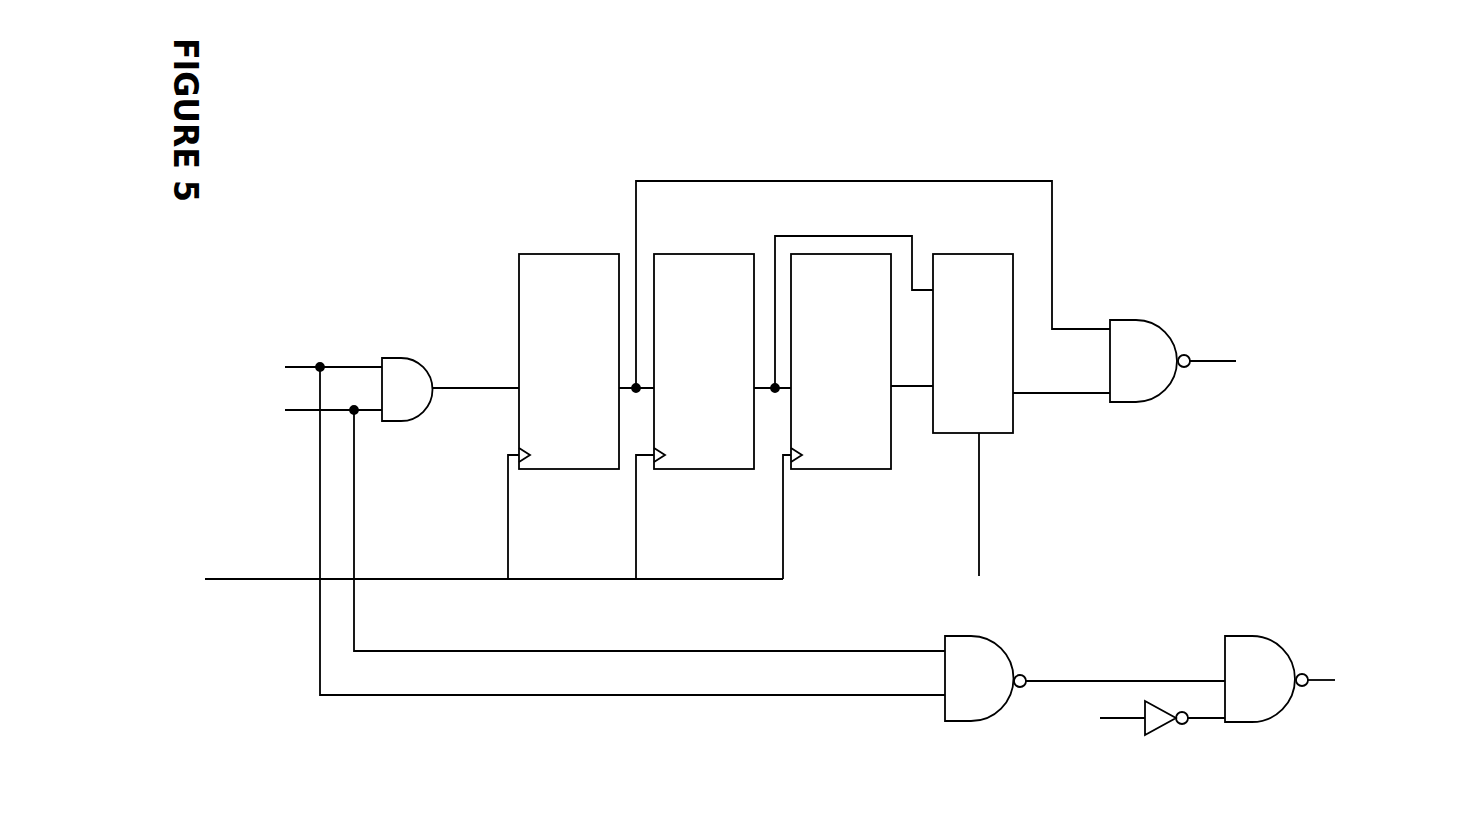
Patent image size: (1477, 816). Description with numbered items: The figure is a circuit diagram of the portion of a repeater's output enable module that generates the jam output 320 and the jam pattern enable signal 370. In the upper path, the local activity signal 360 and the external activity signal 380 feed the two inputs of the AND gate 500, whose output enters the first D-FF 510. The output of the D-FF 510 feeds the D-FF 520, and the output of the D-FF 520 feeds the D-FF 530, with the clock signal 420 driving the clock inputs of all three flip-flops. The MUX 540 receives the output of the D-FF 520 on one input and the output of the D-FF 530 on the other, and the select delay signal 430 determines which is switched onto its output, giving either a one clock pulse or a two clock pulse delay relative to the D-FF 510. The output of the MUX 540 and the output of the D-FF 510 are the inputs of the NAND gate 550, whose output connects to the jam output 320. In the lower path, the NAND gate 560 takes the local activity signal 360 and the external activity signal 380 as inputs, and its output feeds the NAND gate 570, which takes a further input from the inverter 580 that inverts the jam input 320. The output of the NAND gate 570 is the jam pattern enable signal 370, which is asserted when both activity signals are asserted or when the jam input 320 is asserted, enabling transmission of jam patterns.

The local activity signal 360 is at (550, 521).
The external activity signal 380 is at (561, 519).
The AND gate 500 is at (450, 389).
The D-FF 510 is at (563, 416).
The D-FF 520 is at (695, 416).
The D-FF 530 is at (837, 416).
The MUX 540 is at (1021, 343).
The NAND gate 550 is at (1173, 361).
The jam output 320 is at (1227, 564).
The clock signal 420 is at (454, 579).
The select delay signal 430 is at (967, 516).
The NAND gate 560 is at (1085, 678).
The NAND gate 570 is at (1266, 679).
The inverter 580 is at (1185, 725).
The jam pattern enable signal 370 is at (1390, 681).